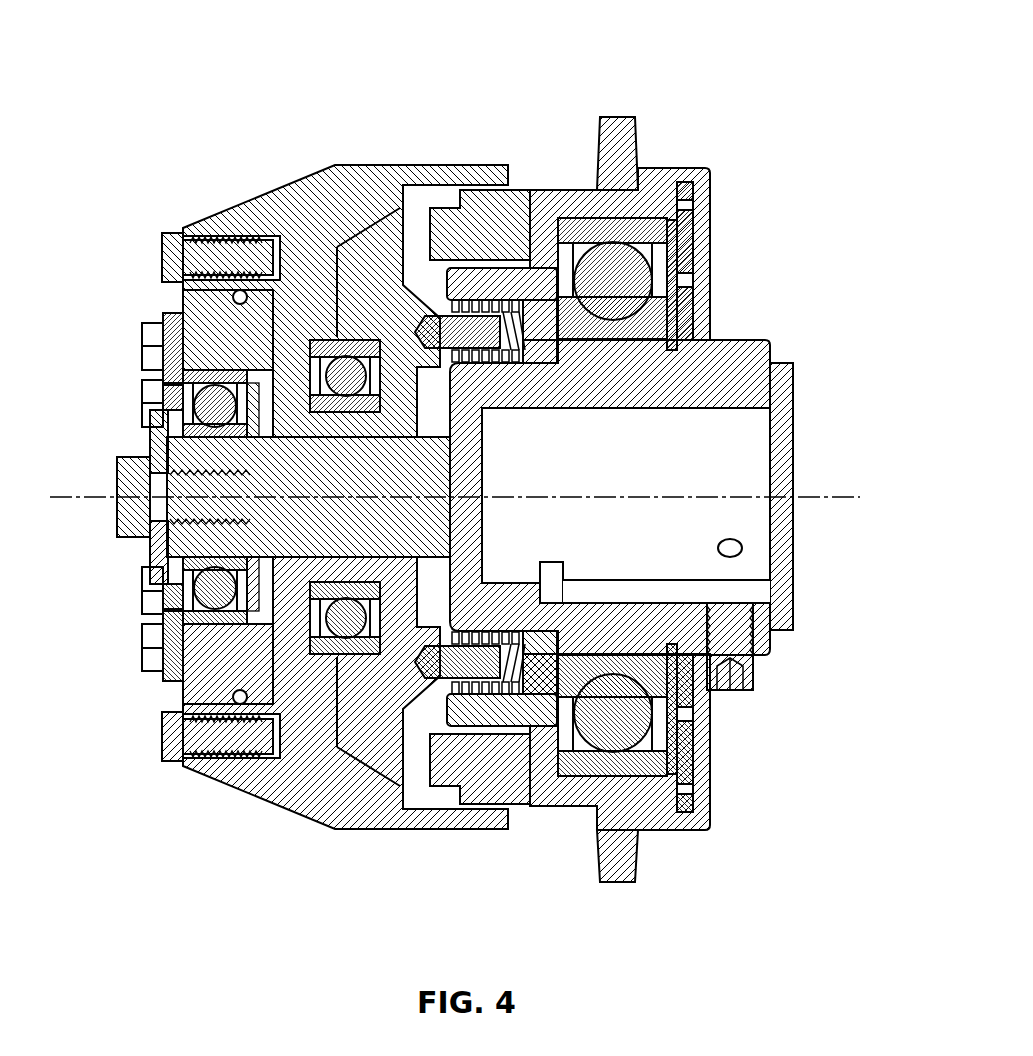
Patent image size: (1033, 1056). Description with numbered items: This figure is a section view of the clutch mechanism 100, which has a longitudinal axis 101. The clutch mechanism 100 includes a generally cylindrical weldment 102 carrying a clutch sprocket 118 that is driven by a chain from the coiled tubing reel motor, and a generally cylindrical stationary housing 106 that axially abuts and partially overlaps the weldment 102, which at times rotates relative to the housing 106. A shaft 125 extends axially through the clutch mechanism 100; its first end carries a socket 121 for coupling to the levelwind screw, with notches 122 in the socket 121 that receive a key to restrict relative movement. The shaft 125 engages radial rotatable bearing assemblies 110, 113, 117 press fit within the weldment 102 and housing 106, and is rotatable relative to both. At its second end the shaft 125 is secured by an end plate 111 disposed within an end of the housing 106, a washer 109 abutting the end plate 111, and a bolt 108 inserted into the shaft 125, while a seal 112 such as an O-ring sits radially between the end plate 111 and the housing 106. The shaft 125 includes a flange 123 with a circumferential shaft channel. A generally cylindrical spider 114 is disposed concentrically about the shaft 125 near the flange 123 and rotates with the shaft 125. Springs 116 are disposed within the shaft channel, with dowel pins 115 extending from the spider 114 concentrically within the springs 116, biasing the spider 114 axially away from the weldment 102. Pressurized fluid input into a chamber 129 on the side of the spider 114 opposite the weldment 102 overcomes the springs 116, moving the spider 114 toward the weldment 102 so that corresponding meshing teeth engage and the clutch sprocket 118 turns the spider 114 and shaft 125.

The clutch mechanism 100 is at (462, 456).
The longitudinal axis 101 is at (835, 494).
The weldment 102 is at (553, 208).
The housing 106 is at (303, 790).
The bolt 108 is at (132, 483).
The washer 109 is at (158, 446).
The bearing assembly 110 is at (200, 412).
The end plate 111 is at (192, 299).
The seal 112 is at (192, 262).
The bearing assembly 113 is at (320, 347).
The spider 114 is at (373, 237).
The dowel pin 115 is at (457, 330).
The spring 116 is at (496, 310).
The bearing assembly 117 is at (633, 268).
The clutch sprocket 118 is at (635, 139).
The socket 121 is at (690, 462).
The notch 122 is at (690, 590).
The flange 123 is at (470, 718).
The shaft 125 is at (200, 584).
The chamber 129 is at (336, 247).